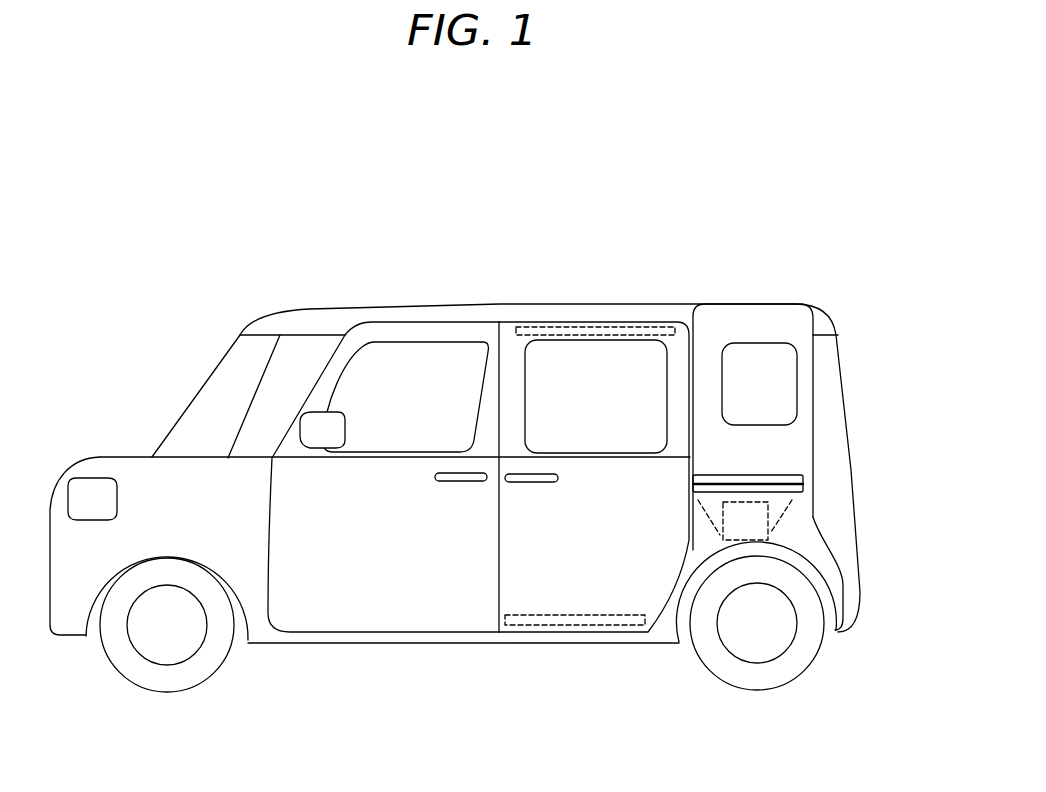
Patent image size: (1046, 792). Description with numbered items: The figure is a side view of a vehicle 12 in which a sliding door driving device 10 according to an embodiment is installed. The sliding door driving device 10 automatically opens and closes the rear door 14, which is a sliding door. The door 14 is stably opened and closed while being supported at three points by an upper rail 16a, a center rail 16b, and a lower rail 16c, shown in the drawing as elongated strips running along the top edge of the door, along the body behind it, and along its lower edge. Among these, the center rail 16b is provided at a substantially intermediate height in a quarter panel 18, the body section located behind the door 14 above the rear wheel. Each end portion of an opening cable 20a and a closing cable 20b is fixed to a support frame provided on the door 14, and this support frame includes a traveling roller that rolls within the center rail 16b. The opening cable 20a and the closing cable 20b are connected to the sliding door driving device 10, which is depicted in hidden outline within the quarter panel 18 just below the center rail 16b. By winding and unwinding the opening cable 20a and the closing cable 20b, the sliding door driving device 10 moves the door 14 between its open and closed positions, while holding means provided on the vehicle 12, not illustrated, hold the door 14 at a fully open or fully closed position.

The sliding door driving device 10 is at (768, 527).
The vehicle 12 is at (412, 209).
The rear door (sliding door) 14 is at (512, 575).
The upper rail 16a is at (634, 326).
The center rail 16b is at (770, 475).
The lower rail 16c is at (597, 626).
The quarter panel 18 is at (750, 325).
The opening cable 20a is at (793, 502).
The closing cable 20b is at (712, 523).